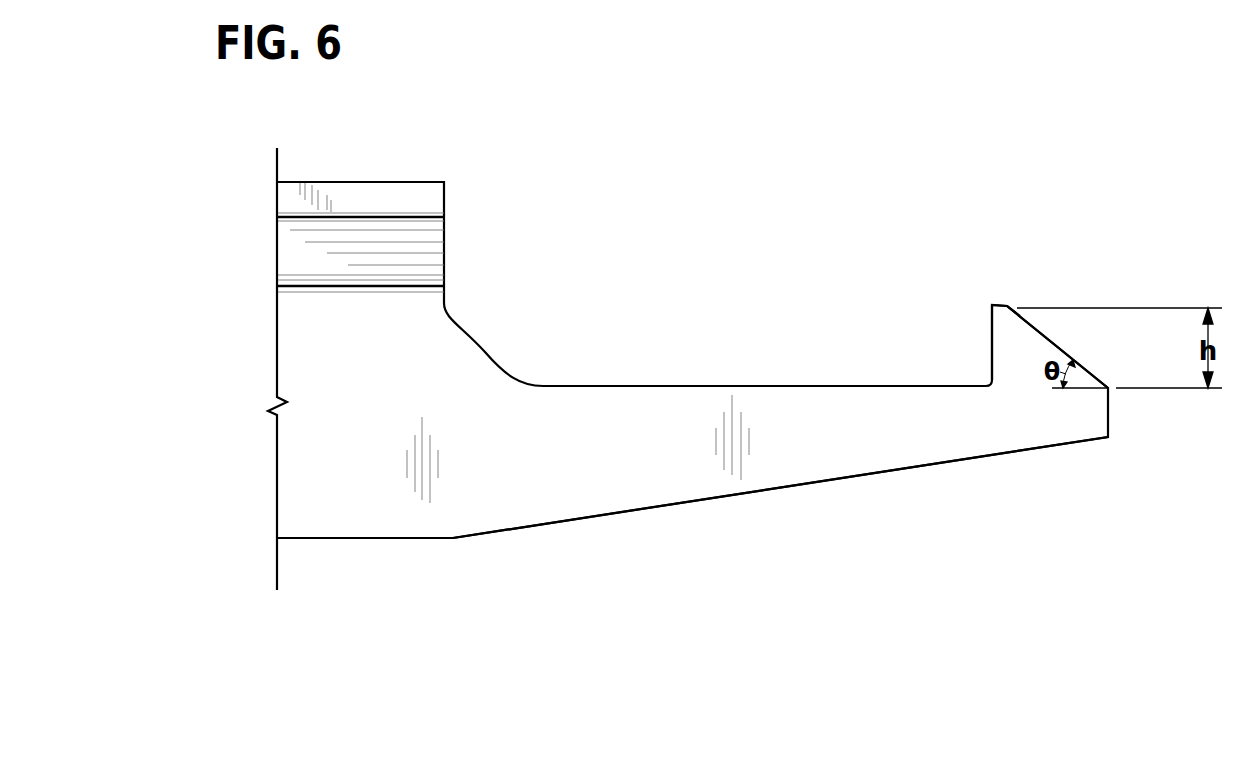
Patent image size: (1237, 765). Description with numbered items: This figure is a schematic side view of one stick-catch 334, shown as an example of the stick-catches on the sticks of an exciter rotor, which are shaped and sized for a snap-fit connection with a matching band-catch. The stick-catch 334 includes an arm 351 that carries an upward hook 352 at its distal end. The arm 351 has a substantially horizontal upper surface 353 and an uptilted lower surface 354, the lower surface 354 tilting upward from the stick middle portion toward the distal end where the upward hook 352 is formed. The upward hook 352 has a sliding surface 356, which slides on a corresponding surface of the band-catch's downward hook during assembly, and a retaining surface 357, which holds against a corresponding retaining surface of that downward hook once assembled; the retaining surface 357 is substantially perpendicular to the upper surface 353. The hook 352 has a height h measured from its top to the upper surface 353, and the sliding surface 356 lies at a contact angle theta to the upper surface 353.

The stick-catch 334 is at (308, 377).
The arm 351 is at (563, 470).
The upward hook 352 is at (1005, 332).
The upper surface 353 is at (732, 385).
The uptilted lower surface 354 is at (820, 483).
The sliding surface 356 is at (1051, 341).
The retaining surface 357 is at (992, 335).